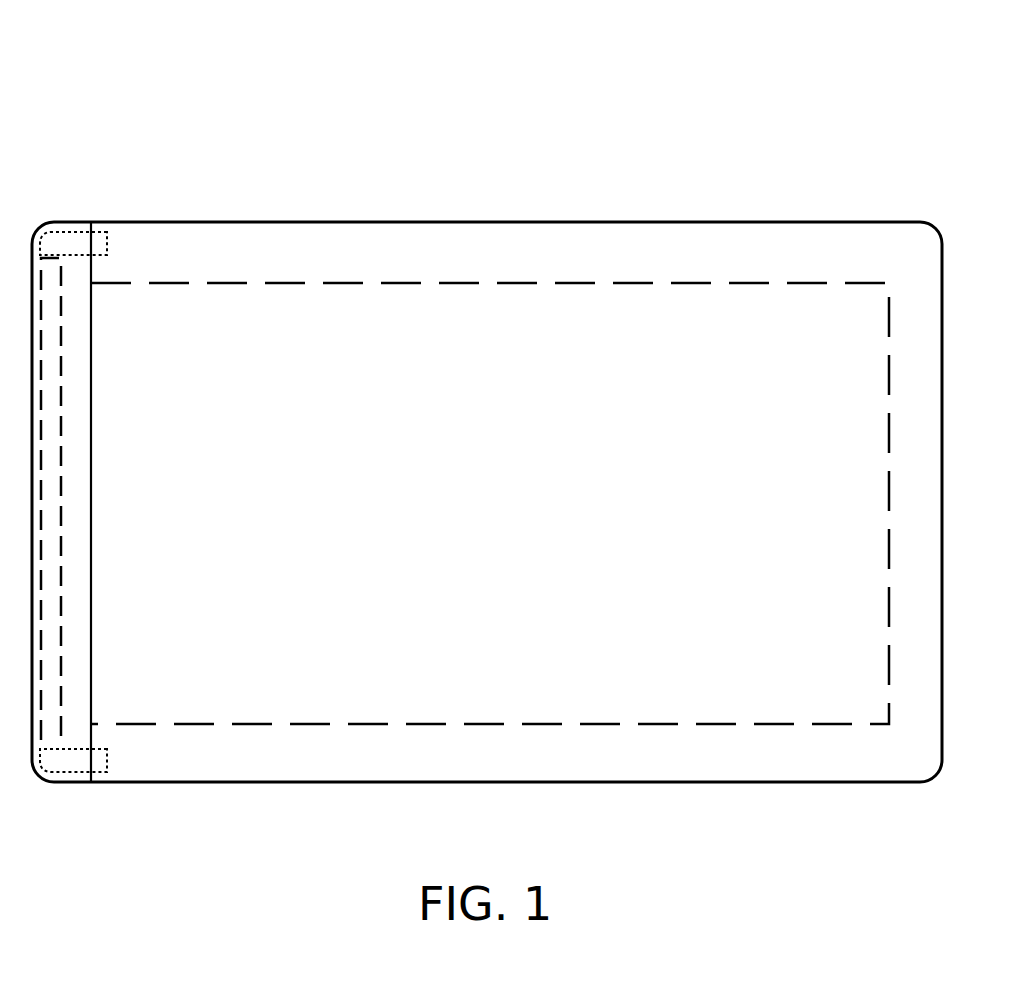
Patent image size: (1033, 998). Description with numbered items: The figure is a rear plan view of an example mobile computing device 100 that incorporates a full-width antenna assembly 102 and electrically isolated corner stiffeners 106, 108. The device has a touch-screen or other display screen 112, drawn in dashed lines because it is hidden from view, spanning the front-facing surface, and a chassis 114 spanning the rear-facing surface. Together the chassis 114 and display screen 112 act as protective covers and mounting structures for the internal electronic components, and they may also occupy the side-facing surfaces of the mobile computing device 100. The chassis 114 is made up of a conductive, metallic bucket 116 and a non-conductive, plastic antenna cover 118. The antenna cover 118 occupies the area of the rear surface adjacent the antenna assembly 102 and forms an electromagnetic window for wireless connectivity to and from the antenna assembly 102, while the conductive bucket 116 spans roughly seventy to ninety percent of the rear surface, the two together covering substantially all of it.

The mobile computing device 100 is at (210, 56).
The antenna assembly 102 is at (49, 590).
The corner stiffener 106 is at (67, 760).
The corner stiffener 108 is at (66, 242).
The display screen 112 is at (507, 514).
The chassis 114 is at (651, 782).
The conductive bucket 116 is at (509, 764).
The non-conductive antenna cover 118 is at (76, 635).